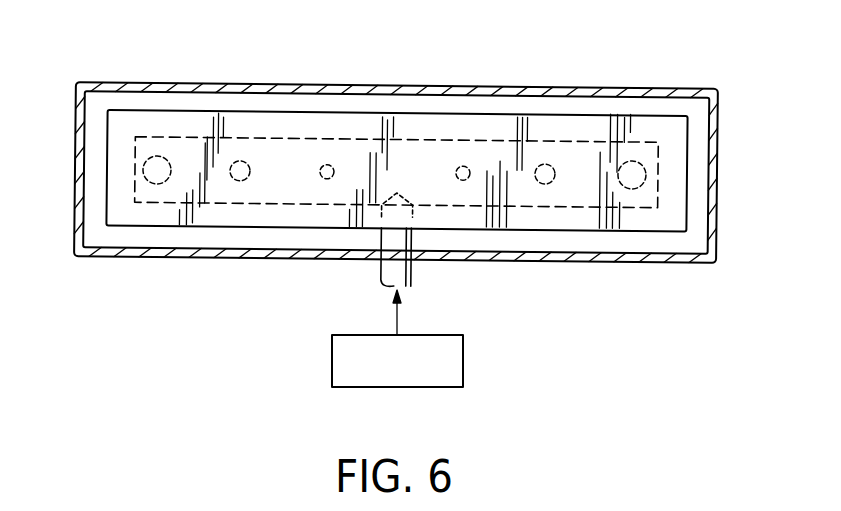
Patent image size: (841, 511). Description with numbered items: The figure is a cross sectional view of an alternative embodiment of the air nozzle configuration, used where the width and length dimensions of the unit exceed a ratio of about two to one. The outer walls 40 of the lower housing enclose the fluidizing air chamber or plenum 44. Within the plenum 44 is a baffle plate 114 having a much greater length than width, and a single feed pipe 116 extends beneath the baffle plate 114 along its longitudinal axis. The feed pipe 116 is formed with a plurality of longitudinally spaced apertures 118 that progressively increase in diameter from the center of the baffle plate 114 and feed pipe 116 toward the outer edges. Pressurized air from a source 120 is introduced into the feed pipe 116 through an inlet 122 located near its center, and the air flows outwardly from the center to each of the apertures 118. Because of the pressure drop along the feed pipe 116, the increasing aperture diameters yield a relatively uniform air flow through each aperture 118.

The outer walls 40 is at (720, 103).
The plenum 44 is at (92, 186).
The baffle plate 114 is at (450, 113).
The feed pipe 116 is at (306, 138).
The apertures 118 is at (623, 163).
The source 120 is at (464, 360).
The inlet 122 is at (400, 287).